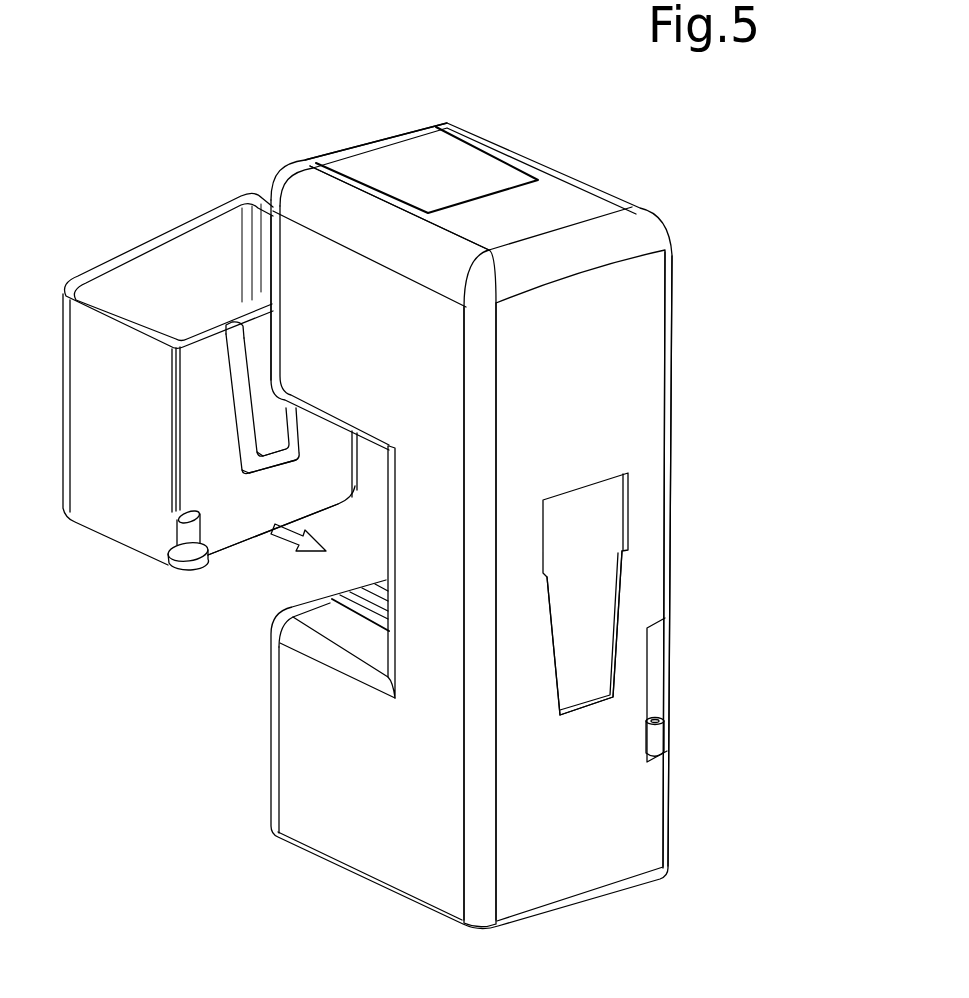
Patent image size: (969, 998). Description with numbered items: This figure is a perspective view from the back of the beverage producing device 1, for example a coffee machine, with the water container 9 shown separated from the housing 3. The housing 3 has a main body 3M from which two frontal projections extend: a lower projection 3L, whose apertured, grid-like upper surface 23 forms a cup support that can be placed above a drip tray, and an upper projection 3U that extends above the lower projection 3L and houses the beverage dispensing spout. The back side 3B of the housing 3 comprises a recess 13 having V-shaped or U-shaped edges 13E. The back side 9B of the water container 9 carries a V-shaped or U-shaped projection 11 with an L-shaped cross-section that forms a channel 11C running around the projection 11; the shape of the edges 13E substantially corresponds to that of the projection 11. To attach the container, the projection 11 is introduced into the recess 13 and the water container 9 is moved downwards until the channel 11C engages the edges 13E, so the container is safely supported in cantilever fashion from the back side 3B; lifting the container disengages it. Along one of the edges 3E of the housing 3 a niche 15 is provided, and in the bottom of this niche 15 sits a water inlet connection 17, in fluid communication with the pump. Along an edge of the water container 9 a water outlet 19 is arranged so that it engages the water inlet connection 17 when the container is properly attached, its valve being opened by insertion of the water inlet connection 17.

The beverage producing device 1 is at (411, 522).
The housing 3 is at (515, 526).
The upper projection 3U is at (380, 251).
The main body 3M is at (419, 572).
The lower projection 3L is at (337, 658).
The back side 3B is at (580, 586).
The edge 3E is at (579, 588).
The water container 9 is at (210, 402).
The back side of the water container 9B is at (273, 553).
The projection 11 is at (235, 377).
The channel 11C is at (243, 448).
The recess 13 is at (585, 594).
The edges of the recess 13E is at (632, 670).
The niche 15 is at (696, 690).
The water inlet connection 17 is at (694, 728).
The water outlet 19 is at (168, 568).
The upper surface 23 is at (360, 574).